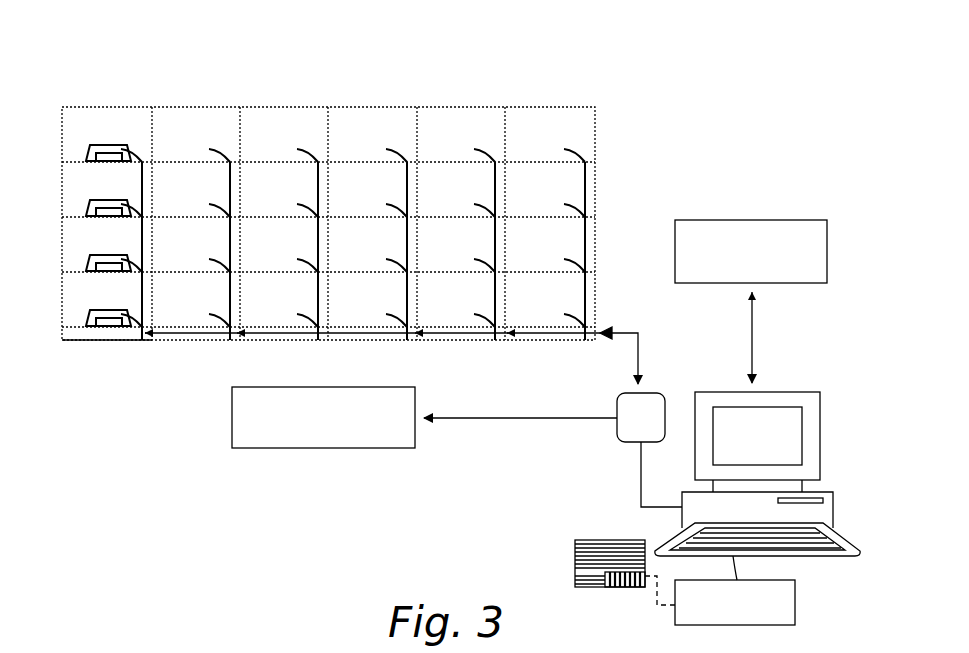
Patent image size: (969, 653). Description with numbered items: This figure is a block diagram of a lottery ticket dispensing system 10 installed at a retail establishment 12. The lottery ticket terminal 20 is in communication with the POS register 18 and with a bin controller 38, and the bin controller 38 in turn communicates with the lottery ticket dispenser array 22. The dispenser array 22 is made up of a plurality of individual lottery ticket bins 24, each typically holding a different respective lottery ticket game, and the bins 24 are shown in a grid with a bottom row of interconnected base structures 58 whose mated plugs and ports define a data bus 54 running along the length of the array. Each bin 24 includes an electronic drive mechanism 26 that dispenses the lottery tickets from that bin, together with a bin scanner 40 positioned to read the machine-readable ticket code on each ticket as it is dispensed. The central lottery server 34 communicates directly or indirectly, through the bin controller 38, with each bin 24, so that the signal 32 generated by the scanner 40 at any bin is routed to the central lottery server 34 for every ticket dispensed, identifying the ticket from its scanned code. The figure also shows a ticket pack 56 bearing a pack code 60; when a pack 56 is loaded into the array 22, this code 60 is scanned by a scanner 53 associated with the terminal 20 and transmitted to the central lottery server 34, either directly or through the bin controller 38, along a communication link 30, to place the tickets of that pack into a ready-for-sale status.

The system 10 is at (338, 66).
The retail establishment 12 is at (651, 197).
The POS register 18 is at (827, 262).
The lottery ticket terminal 20 is at (833, 510).
The lottery ticket dispenser array 22 is at (448, 97).
The lottery ticket bin 24 is at (198, 120).
The electronic drive mechanism 26 is at (85, 201).
The communication link 30 is at (638, 490).
The signal 32 is at (515, 418).
The central lottery server 34 is at (322, 448).
The bin controller 38 is at (617, 400).
The bin scanner 40 is at (100, 150).
The scanner 53 is at (795, 605).
The data bus 54 is at (270, 343).
The ticket pack 56 is at (575, 553).
The base structure 58 is at (100, 343).
The pack code 60 is at (630, 587).